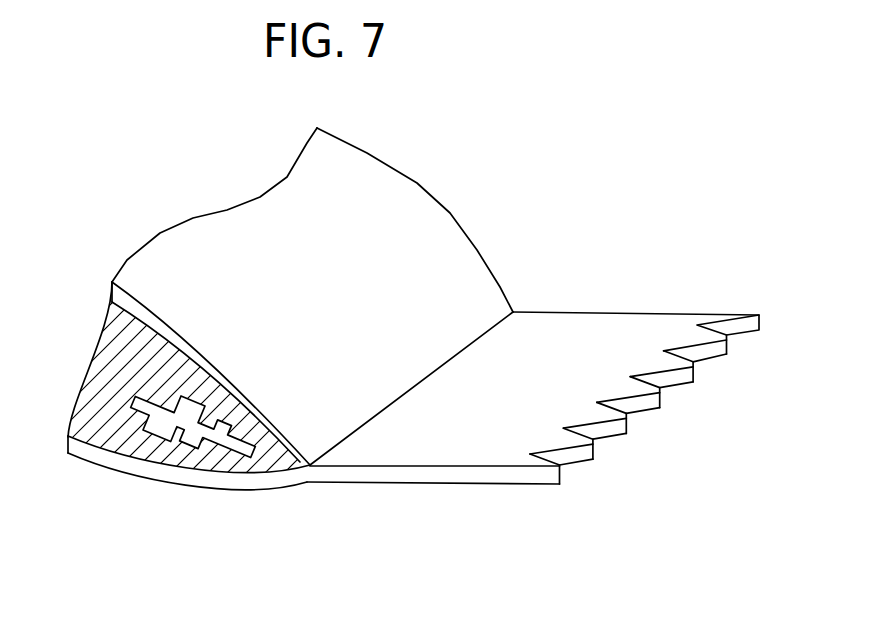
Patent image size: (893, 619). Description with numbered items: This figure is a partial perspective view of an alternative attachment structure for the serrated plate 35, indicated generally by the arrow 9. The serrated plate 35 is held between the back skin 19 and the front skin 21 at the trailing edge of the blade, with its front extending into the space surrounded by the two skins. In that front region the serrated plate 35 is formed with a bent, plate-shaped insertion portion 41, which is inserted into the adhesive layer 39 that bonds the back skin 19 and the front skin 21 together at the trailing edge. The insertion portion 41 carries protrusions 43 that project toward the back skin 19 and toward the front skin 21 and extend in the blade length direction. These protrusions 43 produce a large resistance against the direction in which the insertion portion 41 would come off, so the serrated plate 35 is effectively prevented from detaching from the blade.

The blade member 9 is at (561, 191).
The back skin 19 is at (410, 207).
The front skin 21 is at (178, 488).
The serrated plate 35 is at (622, 312).
The adhesive layer 39 is at (92, 443).
The insertion portion 41 is at (247, 443).
The protrusions 43 is at (212, 408).